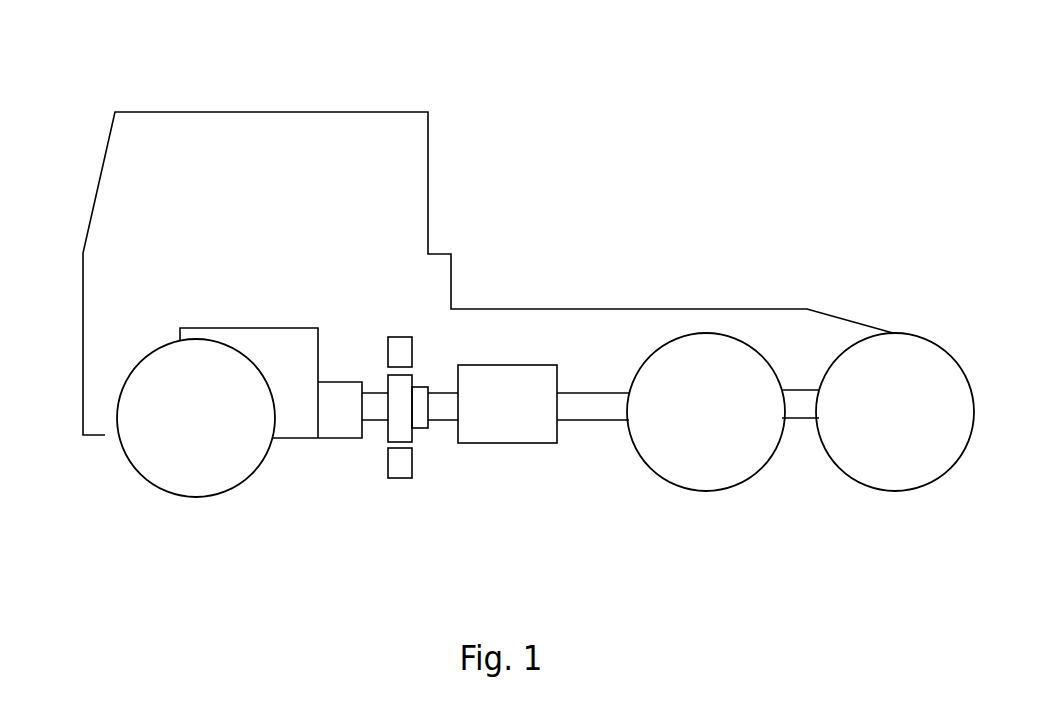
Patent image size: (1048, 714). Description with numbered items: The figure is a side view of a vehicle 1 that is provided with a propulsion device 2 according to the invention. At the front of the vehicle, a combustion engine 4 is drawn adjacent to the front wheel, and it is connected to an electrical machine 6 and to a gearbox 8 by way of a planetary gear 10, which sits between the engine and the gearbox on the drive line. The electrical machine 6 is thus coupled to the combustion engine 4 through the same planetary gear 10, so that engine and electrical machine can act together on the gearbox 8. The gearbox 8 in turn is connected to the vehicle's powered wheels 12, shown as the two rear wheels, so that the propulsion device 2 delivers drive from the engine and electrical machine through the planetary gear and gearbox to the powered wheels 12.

The vehicle 1 is at (536, 84).
The propulsion device 2 is at (456, 336).
The combustion engine 4 is at (222, 328).
The electrical machine 6 is at (413, 462).
The gearbox 8 is at (537, 443).
The planetary gear 10 is at (364, 320).
The powered wheels 12 is at (752, 478).